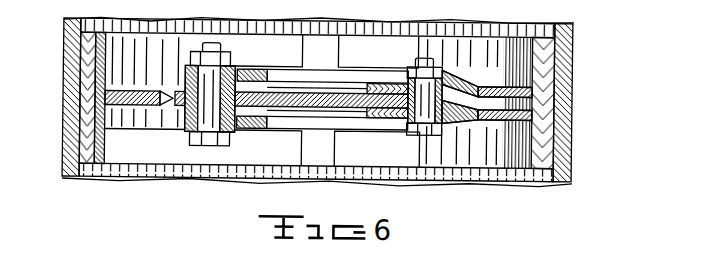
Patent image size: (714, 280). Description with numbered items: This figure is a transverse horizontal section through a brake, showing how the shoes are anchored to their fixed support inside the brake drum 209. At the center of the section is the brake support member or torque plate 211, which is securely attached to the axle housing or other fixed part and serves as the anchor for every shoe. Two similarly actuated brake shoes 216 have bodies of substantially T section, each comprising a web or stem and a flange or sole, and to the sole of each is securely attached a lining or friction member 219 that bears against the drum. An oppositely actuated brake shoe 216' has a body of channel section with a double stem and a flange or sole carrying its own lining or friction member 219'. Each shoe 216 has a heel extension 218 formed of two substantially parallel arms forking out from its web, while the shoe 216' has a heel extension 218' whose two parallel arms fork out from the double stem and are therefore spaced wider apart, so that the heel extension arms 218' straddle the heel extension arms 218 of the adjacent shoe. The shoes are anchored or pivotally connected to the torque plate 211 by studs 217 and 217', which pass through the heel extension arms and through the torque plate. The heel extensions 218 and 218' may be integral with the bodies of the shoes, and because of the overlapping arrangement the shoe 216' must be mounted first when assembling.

The brake drum 209 is at (72, 48).
The lining or friction member 219 is at (58, 98).
The lining or friction member 219' is at (587, 103).
The brake shoe 216 is at (159, 98).
The oppositely actuated brake shoe 216' is at (485, 102).
The brake support member or torque plate 211 is at (312, 92).
The heel extension 218 is at (333, 99).
The heel extension 218' is at (282, 104).
The stud 217 is at (442, 132).
The stud 217' is at (210, 127).